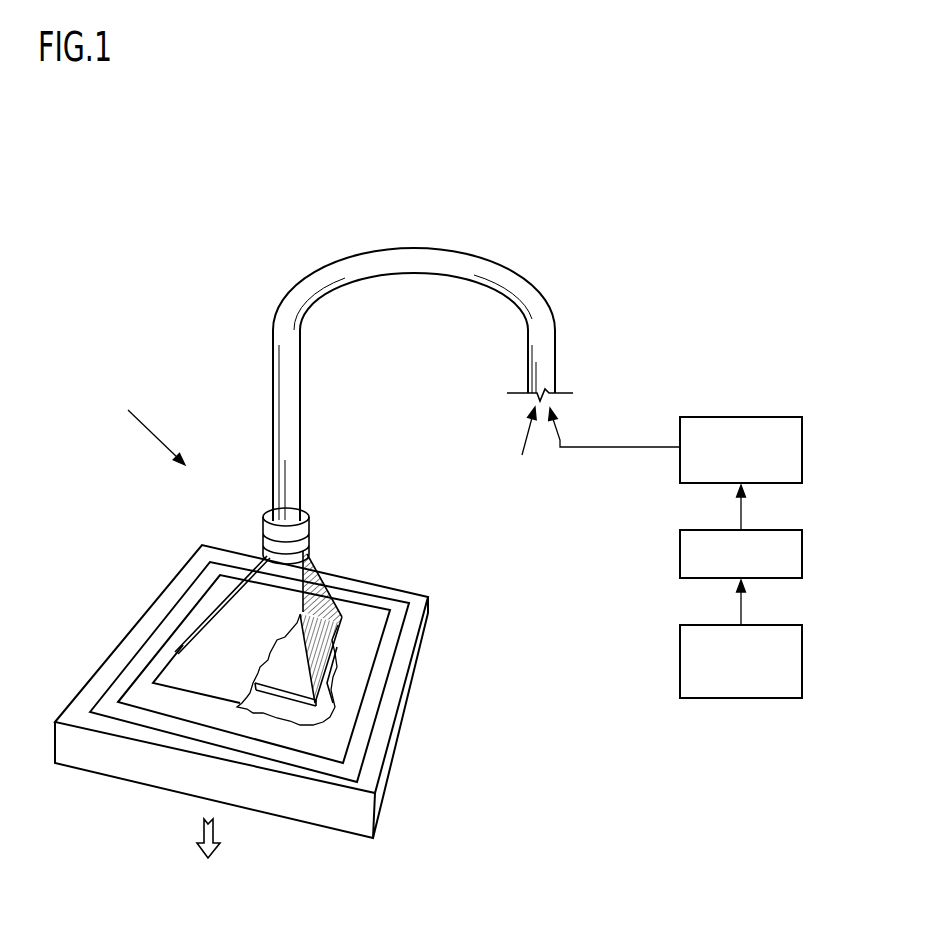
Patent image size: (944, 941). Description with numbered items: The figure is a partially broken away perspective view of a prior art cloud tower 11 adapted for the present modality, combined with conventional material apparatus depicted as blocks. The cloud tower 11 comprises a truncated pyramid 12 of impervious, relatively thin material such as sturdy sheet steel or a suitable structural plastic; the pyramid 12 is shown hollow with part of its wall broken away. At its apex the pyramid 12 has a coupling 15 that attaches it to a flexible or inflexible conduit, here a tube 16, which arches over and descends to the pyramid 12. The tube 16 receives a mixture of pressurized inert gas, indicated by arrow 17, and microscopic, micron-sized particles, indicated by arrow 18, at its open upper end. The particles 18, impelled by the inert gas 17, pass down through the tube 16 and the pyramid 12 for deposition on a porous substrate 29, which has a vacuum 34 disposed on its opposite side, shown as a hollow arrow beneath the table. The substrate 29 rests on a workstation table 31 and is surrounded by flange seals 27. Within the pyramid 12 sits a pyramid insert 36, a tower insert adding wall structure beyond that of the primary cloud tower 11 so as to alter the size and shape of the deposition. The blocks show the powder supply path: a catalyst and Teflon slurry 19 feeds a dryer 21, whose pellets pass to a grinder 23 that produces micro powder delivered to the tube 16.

The cloud tower 11 is at (125, 413).
The truncated pyramid 12 is at (340, 618).
The coupling 15 is at (310, 536).
The tube 16 is at (295, 385).
The pressurized inert gas 17 is at (502, 453).
The microscopic particles 18 is at (560, 437).
The catalyst and teflon slurry 19 is at (678, 642).
The dryer 21 is at (678, 537).
The grinder to micro powder 23 is at (762, 415).
The flange seals 27 is at (372, 646).
The porous substrate 29 is at (393, 658).
The workstation table 31 is at (403, 712).
The vacuum 34 is at (208, 862).
The pyramid insert 36 is at (290, 677).